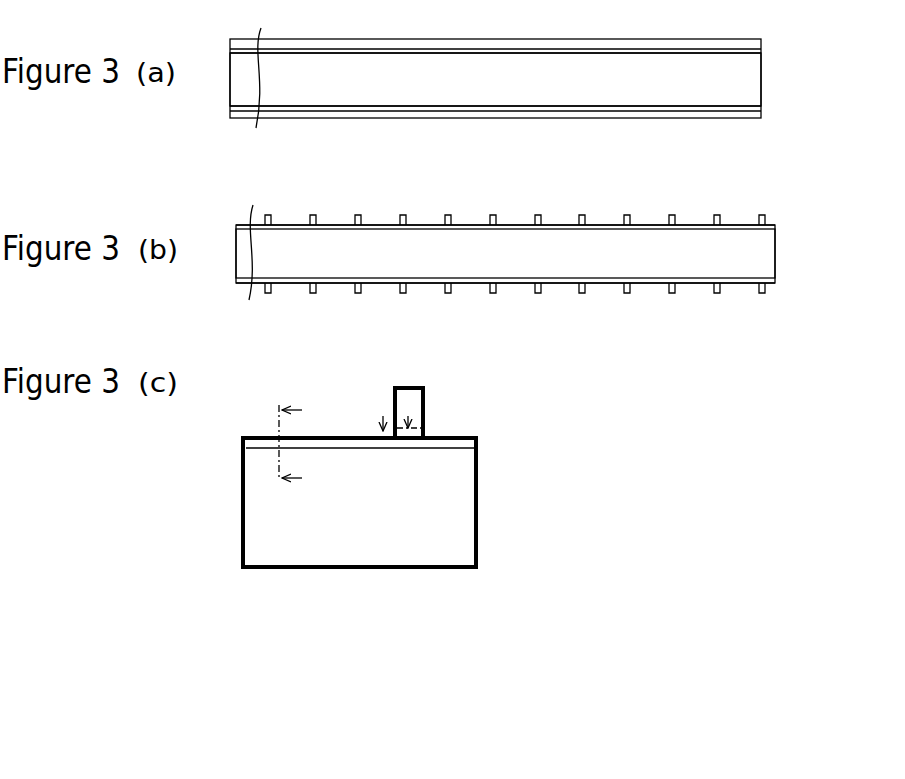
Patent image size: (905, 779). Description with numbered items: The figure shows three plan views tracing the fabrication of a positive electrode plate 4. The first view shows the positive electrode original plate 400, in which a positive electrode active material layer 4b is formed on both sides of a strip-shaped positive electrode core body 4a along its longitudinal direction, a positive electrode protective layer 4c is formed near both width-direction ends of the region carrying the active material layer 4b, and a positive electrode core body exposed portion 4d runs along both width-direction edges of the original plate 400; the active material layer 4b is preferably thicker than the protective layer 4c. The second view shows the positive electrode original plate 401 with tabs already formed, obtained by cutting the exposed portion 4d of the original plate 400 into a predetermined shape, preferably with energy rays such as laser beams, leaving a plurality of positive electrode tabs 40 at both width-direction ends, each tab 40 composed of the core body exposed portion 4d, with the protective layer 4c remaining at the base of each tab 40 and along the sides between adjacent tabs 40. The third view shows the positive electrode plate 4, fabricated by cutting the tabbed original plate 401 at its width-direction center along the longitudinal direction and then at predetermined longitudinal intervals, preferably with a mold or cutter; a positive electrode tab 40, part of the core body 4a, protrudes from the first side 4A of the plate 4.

In FIG. 3C, the positive electrode plate 4 is at (373, 465).
In FIG. 3C, the first side 4A is at (346, 435).
In FIG. 3A, the positive electrode core body 4a is at (762, 43).
In FIG. 3A, the positive electrode active material layer 4b is at (748, 80).
In FIG. 3B, the positive electrode active material layer 4b is at (758, 256).
In FIG. 3C, the positive electrode active material layer 4b is at (450, 510).
In FIG. 3A, the positive electrode protective layer 4c is at (763, 51).
In FIG. 3B, the positive electrode protective layer 4c is at (771, 223).
In FIG. 3C, the positive electrode protective layer 4c is at (466, 449).
In FIG. 3A, the positive electrode core body exposed portion 4d is at (546, 87).
In FIG. 3B, the positive electrode tab 40 is at (717, 214).
In FIG. 3C, the positive electrode tab 40 is at (425, 405).
In FIG. 3A, the positive electrode original plate 400 is at (546, 99).
In FIG. 3B, the positive electrode original plate with tabs already formed 401 is at (340, 218).